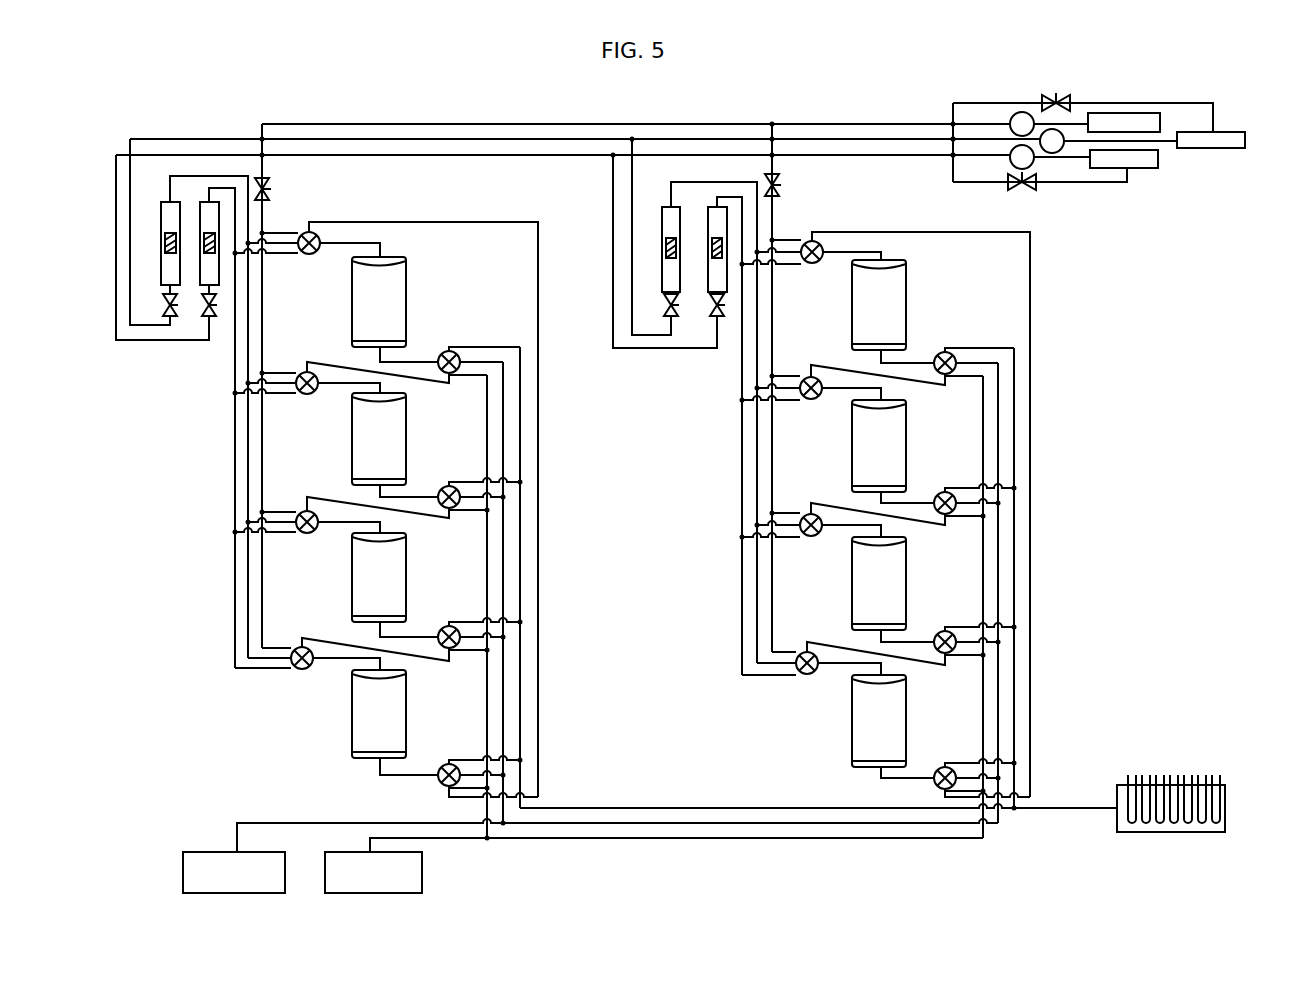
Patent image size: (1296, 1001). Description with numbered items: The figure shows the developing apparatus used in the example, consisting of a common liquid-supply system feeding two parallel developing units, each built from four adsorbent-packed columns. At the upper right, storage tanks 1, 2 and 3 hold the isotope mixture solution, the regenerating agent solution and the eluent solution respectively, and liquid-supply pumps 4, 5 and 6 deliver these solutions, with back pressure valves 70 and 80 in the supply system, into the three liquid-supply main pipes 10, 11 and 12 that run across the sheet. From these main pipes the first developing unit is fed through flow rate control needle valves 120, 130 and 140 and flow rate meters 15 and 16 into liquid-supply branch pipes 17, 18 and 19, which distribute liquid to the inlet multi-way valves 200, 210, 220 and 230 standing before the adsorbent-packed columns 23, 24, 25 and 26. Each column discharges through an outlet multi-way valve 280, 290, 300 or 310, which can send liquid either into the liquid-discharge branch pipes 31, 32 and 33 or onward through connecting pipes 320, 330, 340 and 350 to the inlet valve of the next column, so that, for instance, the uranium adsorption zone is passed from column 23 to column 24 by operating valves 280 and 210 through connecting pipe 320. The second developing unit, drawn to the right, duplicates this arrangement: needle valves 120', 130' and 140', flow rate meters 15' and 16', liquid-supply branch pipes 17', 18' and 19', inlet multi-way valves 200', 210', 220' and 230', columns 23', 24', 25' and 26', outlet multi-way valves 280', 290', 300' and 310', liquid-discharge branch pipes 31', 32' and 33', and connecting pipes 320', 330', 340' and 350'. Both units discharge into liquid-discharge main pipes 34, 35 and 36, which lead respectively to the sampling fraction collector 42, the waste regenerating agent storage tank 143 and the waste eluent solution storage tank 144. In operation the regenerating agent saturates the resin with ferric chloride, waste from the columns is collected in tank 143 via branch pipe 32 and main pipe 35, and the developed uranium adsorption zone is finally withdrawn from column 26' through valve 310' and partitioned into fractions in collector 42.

The storage tank 1 is at (1116, 113).
The storage tank 2 is at (1226, 132).
The storage tank 3 is at (1148, 168).
The liquid-supply pump 4 is at (1013, 117).
The liquid-supply pump 5 is at (1043, 133).
The liquid-supply pump 6 is at (1012, 163).
The liquid-supply main pipe 10 is at (426, 122).
The liquid-supply main pipe 11 is at (456, 137).
The liquid-supply main pipe 12 is at (442, 157).
The flow rate meter 15 is at (156, 235).
The flow rate meter 16 is at (194, 235).
The liquid-supply branch pipe 17 is at (279, 386).
The liquid-supply branch pipe 18 is at (209, 417).
The liquid-supply branch pipe 19 is at (216, 428).
The adsorbent-packed column 23 is at (379, 302).
The adsorbent-packed column 24 is at (379, 439).
The adsorbent-packed column 25 is at (379, 577).
The adsorbent-packed column 26 is at (379, 714).
The liquid-discharge branch pipe 31 is at (547, 577).
The liquid-discharge branch pipe 32 is at (540, 594).
The liquid-discharge branch pipe 33 is at (471, 608).
The liquid-discharge main pipe 34 is at (712, 806).
The liquid-discharge main pipe 35 is at (753, 821).
The liquid-discharge main pipe 36 is at (718, 840).
The sampling fraction collector 42 is at (1168, 832).
The back pressure valve 70 is at (1058, 93).
The back pressure valve 80 is at (1036, 185).
The flow rate control needle valve 120 is at (288, 190).
The flow rate control needle valve 130 is at (141, 257).
The flow rate control needle valve 140 is at (166, 265).
The waste regenerating agent storage tank 143 is at (234, 872).
The waste eluent solution storage tank 144 is at (373, 872).
The multi-way valve 200 is at (386, 509).
The multi-way valve 210 is at (307, 398).
The multi-way valve 220 is at (307, 541).
The multi-way valve 230 is at (307, 676).
The multi-way valve 280 is at (450, 344).
The multi-way valve 290 is at (450, 478).
The multi-way valve 300 is at (450, 620).
The multi-way valve 310 is at (450, 756).
The connecting pipe 320 is at (388, 387).
The connecting pipe 330 is at (388, 522).
The connecting pipe 340 is at (381, 664).
The connecting pipe 350 is at (467, 801).
The flow rate meter 15' is at (654, 238).
The flow rate meter 16' is at (700, 238).
The liquid-supply branch pipe 17' is at (792, 387).
The liquid-supply branch pipe 18' is at (714, 422).
The liquid-supply branch pipe 19' is at (720, 436).
The adsorbent-packed column 23' is at (879, 305).
The adsorbent-packed column 24' is at (879, 446).
The adsorbent-packed column 25' is at (879, 583).
The adsorbent-packed column 26' is at (879, 721).
The liquid-discharge branch pipe 31' is at (1042, 578).
The liquid-discharge branch pipe 32' is at (1036, 593).
The liquid-discharge branch pipe 33' is at (963, 607).
The flow rate control needle valve 120' is at (800, 183).
The flow rate control needle valve 130' is at (647, 262).
The flow rate control needle valve 140' is at (669, 270).
The multi-way valve 200' is at (885, 514).
The multi-way valve 210' is at (811, 405).
The multi-way valve 220' is at (811, 542).
The multi-way valve 230' is at (811, 681).
The multi-way valve 280' is at (947, 344).
The multi-way valve 290' is at (947, 485).
The multi-way valve 300' is at (947, 624).
The multi-way valve 310' is at (947, 760).
The connecting pipe 320' is at (891, 390).
The connecting pipe 330' is at (890, 529).
The connecting pipe 340' is at (888, 671).
The connecting pipe 350' is at (955, 793).